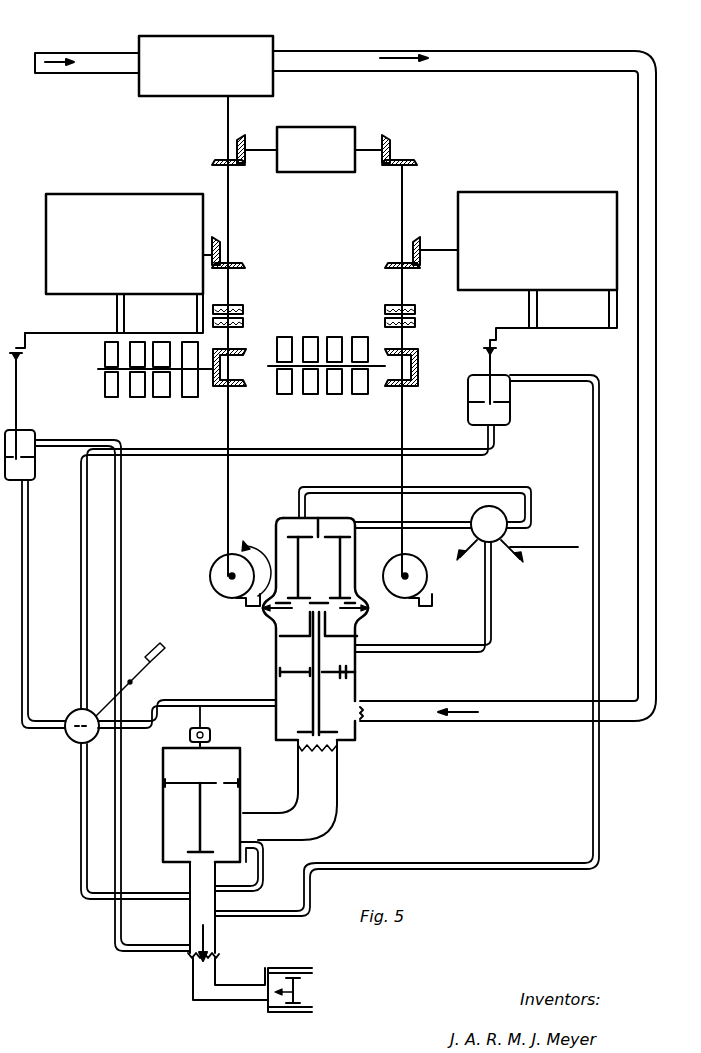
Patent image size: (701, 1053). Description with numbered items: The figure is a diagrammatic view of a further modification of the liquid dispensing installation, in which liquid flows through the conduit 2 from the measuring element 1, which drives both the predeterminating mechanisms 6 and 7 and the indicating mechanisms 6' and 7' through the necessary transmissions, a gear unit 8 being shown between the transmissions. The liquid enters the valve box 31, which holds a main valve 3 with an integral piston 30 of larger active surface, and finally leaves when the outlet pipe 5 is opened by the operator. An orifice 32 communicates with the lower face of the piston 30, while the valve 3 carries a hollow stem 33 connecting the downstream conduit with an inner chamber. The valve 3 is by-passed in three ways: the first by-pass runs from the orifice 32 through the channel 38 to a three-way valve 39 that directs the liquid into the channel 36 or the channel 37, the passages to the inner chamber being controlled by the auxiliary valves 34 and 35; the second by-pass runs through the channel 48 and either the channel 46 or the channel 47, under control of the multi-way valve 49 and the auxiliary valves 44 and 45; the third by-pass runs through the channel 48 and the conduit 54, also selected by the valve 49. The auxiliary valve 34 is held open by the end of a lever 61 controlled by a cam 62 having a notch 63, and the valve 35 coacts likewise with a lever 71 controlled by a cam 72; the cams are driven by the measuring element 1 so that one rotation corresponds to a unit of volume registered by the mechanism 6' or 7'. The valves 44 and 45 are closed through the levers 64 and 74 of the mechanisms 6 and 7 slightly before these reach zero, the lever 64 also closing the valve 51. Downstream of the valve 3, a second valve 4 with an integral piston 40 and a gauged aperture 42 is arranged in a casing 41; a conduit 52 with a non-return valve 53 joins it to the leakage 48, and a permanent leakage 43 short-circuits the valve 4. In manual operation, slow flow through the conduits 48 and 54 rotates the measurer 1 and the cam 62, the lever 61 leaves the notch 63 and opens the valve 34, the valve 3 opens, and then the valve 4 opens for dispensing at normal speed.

The measuring element 1 is at (247, 45).
The conduit 2 is at (637, 147).
The main valve 3 is at (307, 733).
The second valve 4 is at (206, 855).
The pipe 5 is at (283, 972).
The predeterminating mechanism 6 is at (114, 263).
The indicating mechanism 6' is at (155, 383).
The predeterminating mechanism 7 is at (519, 270).
The indicating mechanism 7' is at (326, 379).
The gear unit 8 is at (340, 128).
The piston 30 is at (297, 670).
The valve box 31 is at (362, 689).
The orifice 32 is at (343, 680).
The hollow stem 33 is at (303, 618).
The auxiliary valve 34 is at (300, 566).
The auxiliary valve 35 is at (342, 560).
The channel 36 is at (470, 490).
The channel 37 is at (458, 530).
The channel 38 is at (492, 607).
The three-way valve 39 is at (508, 527).
The piston 40 is at (190, 781).
The casing 41 is at (163, 833).
The gauged aperture 42 is at (222, 788).
The permanent leakage 43 is at (250, 889).
The auxiliary valve 44 is at (36, 461).
The auxiliary valve 45 is at (511, 404).
The channel 46 is at (28, 578).
The channel 47 is at (84, 594).
The channel 48 is at (225, 702).
The multi-way valve 49 is at (92, 744).
The valve 51 is at (284, 1004).
The conduit 52 is at (198, 721).
The non return valve 53 is at (212, 737).
The conduit 54 is at (80, 820).
The lever 61 is at (252, 607).
The cam 62 is at (216, 558).
The notch 63 is at (256, 564).
The lever 64 is at (30, 368).
The lever 71 is at (400, 607).
The cam 72 is at (428, 576).
The lever 74 is at (481, 363).